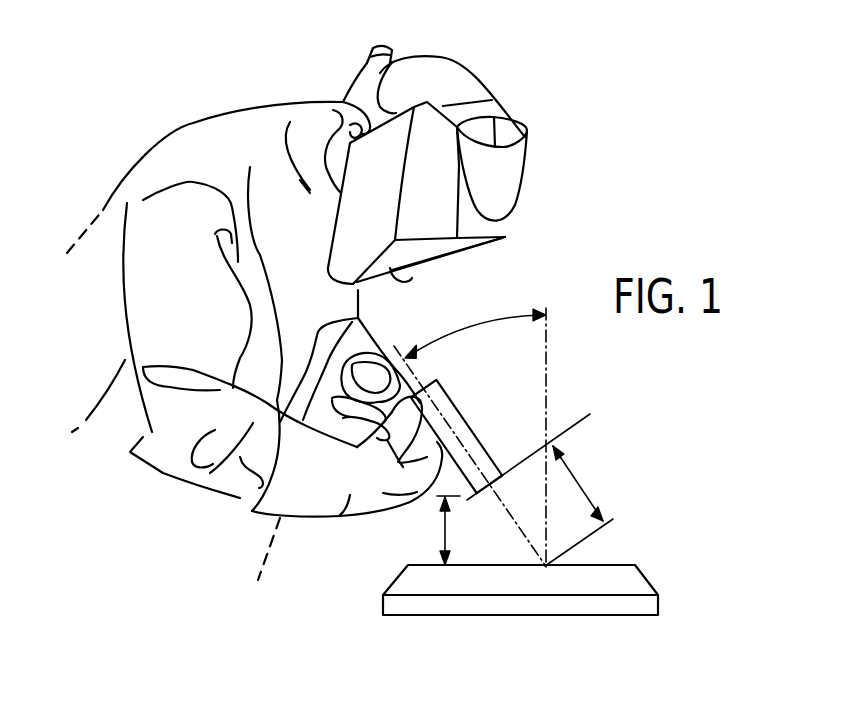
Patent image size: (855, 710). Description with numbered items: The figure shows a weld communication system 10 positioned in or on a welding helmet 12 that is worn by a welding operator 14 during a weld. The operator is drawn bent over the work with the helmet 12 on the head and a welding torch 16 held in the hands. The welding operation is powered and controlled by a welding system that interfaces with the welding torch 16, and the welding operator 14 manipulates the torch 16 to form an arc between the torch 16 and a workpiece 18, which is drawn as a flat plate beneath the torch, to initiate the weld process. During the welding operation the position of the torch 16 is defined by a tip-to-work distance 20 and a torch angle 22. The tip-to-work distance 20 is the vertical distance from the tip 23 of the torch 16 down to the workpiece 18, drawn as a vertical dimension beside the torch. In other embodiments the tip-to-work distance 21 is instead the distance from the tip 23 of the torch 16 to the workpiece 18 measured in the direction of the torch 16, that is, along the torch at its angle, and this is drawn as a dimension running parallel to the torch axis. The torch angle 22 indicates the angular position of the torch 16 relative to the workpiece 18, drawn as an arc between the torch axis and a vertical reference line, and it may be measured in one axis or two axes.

The weld communication system 10 is at (448, 276).
The welding helmet 12 is at (512, 186).
The welding operator 14 is at (230, 126).
The welding torch 16 is at (470, 429).
The workpiece 18 is at (650, 582).
The tip-to-work distance 20 is at (446, 530).
The tip-to-work distance 21 is at (572, 476).
The torch angle 22 is at (477, 327).
The tip 23 is at (495, 483).